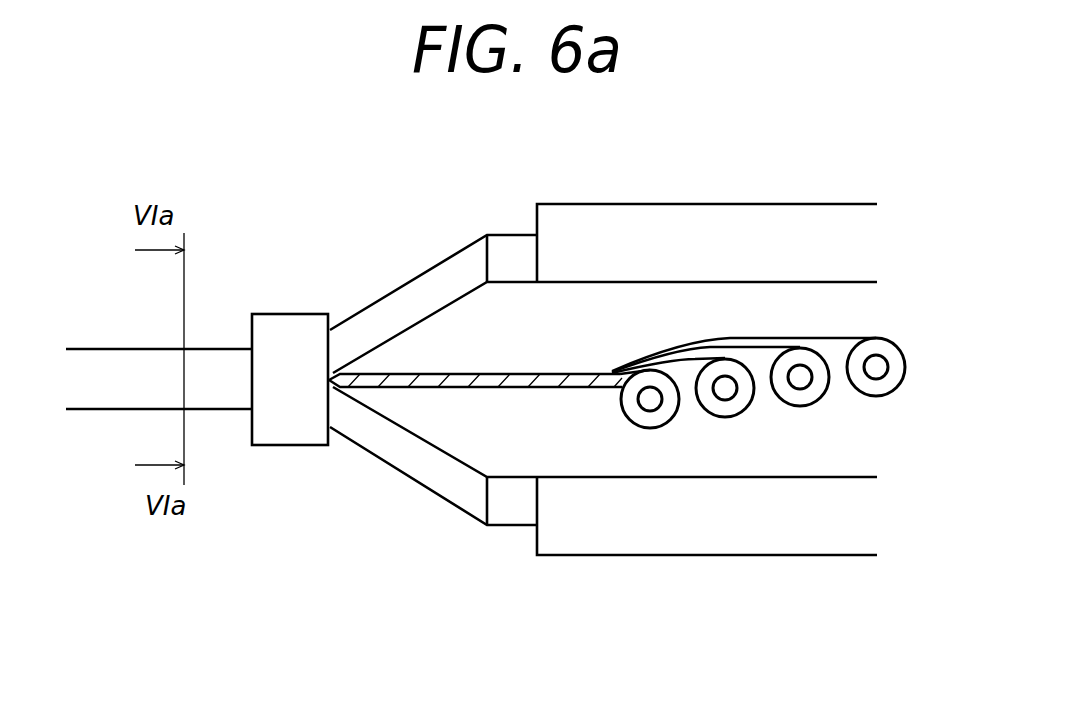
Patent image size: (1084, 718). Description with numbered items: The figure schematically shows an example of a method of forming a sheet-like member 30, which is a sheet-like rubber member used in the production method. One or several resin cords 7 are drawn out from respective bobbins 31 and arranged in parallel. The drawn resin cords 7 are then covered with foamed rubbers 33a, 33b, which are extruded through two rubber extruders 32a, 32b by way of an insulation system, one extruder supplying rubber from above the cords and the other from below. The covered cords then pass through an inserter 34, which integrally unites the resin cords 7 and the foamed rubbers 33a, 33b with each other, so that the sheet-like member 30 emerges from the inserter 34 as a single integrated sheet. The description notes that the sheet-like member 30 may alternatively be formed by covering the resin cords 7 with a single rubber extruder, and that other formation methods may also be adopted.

The resin cord 7 is at (470, 368).
The sheet-like member 30 is at (117, 360).
The bobbin 31 is at (663, 415).
The rubber extruder 32a is at (773, 220).
The rubber extruder 32b is at (767, 527).
The foamed rubber 33a is at (410, 300).
The foamed rubber 33b is at (405, 458).
The inserter 34 is at (283, 333).